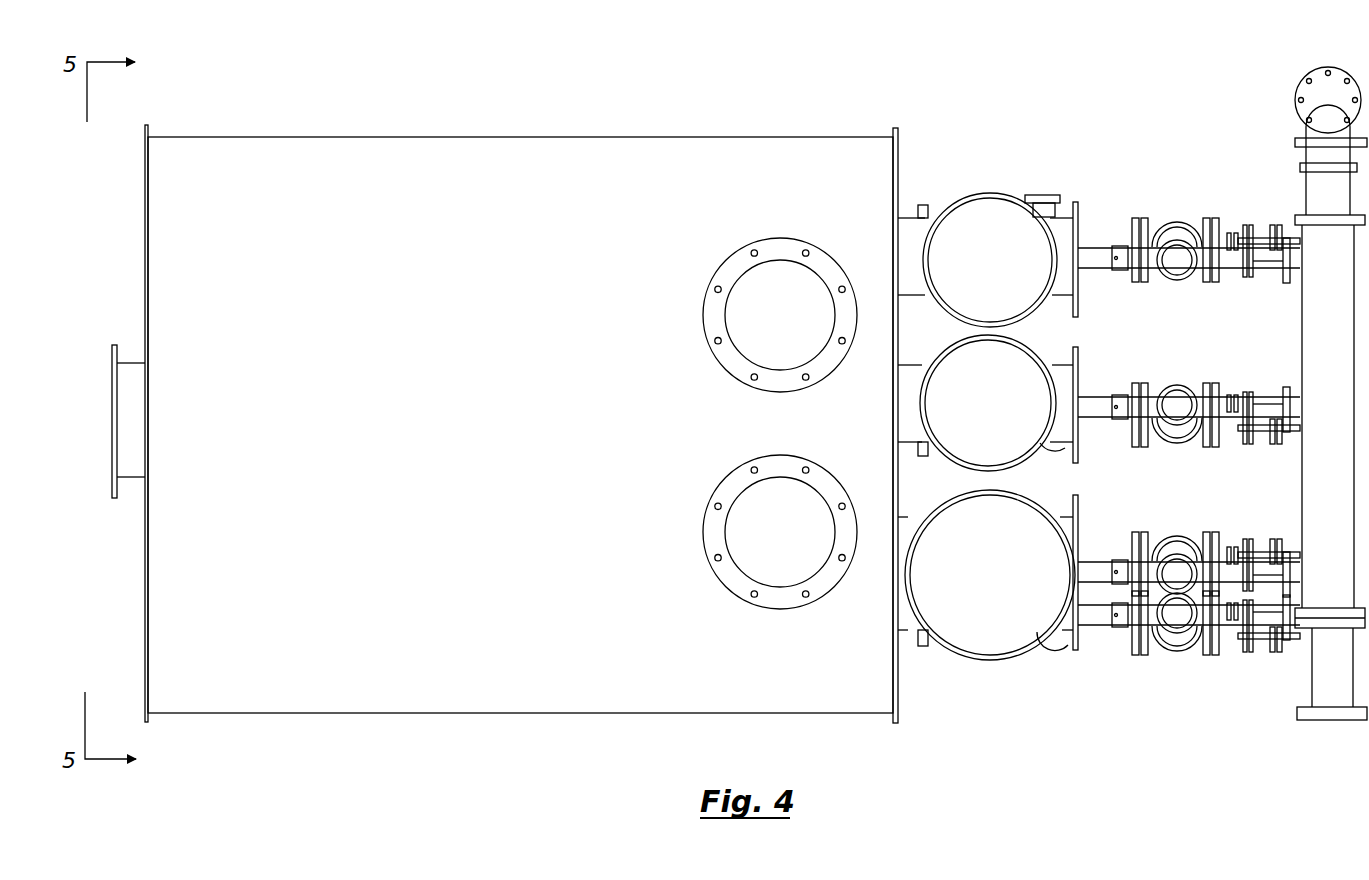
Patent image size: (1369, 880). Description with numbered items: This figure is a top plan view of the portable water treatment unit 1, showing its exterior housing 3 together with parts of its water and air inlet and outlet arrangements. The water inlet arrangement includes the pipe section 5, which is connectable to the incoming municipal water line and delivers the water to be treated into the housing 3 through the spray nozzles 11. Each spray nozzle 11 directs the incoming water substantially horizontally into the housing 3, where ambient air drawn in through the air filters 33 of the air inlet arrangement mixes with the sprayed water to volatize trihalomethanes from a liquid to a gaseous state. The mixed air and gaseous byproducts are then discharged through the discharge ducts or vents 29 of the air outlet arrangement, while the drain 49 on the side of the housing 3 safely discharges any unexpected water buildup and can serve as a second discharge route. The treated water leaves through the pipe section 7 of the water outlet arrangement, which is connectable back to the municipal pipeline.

The unit 1 is at (1062, 100).
The exterior housing 3 is at (470, 130).
The pipe section 5 is at (1310, 332).
The pipe section 7 is at (1323, 675).
The spray nozzle 11 is at (1068, 235).
The discharge duct or vent 29 is at (722, 264).
The air filter 33 is at (1006, 276).
The drain 49 is at (113, 440).